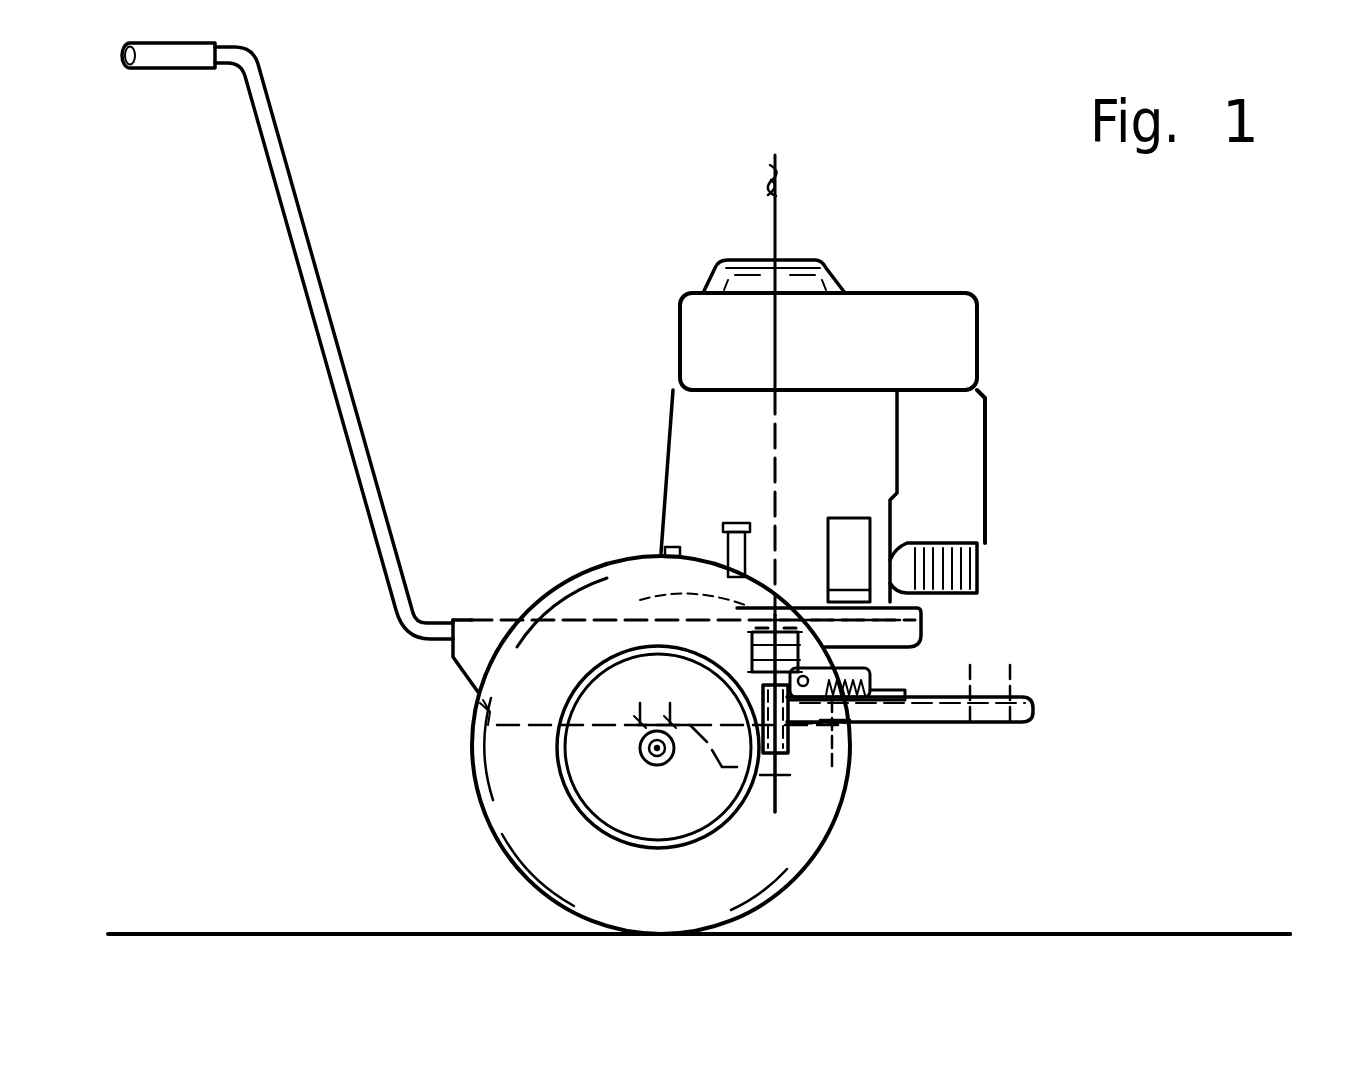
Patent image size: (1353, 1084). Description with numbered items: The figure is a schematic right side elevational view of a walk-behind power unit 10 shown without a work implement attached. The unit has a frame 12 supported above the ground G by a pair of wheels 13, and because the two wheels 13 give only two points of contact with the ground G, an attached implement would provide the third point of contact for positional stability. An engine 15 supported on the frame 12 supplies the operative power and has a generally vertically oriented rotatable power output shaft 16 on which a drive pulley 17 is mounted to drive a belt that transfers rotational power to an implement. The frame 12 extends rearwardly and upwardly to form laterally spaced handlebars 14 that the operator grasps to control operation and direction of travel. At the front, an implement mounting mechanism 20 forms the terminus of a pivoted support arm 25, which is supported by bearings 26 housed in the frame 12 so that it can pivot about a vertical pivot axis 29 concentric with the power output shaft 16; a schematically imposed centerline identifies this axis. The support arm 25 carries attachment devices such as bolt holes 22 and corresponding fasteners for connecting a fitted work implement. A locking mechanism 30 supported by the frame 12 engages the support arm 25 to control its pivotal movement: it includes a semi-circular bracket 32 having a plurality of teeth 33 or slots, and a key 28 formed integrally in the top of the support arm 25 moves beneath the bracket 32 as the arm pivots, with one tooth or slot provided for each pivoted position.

The walk-behind power unit 10 is at (1037, 293).
The frame 12 is at (455, 662).
The wheels 13 is at (468, 782).
The handlebars 14 is at (290, 240).
The engine 15 is at (675, 343).
The power output shaft 16 is at (745, 622).
The drive pulley 17 is at (602, 580).
The implement mounting mechanism 20 is at (1013, 611).
The bolt holes 22 is at (990, 678).
The support arm 25 is at (990, 722).
The bearings 26 is at (793, 737).
The key 28 is at (900, 677).
The vertical pivot axis 29 is at (783, 805).
The locking mechanism 30 is at (913, 660).
The semi-circular bracket 32 is at (900, 553).
The teeth 33 is at (866, 725).
The ground G is at (1278, 930).